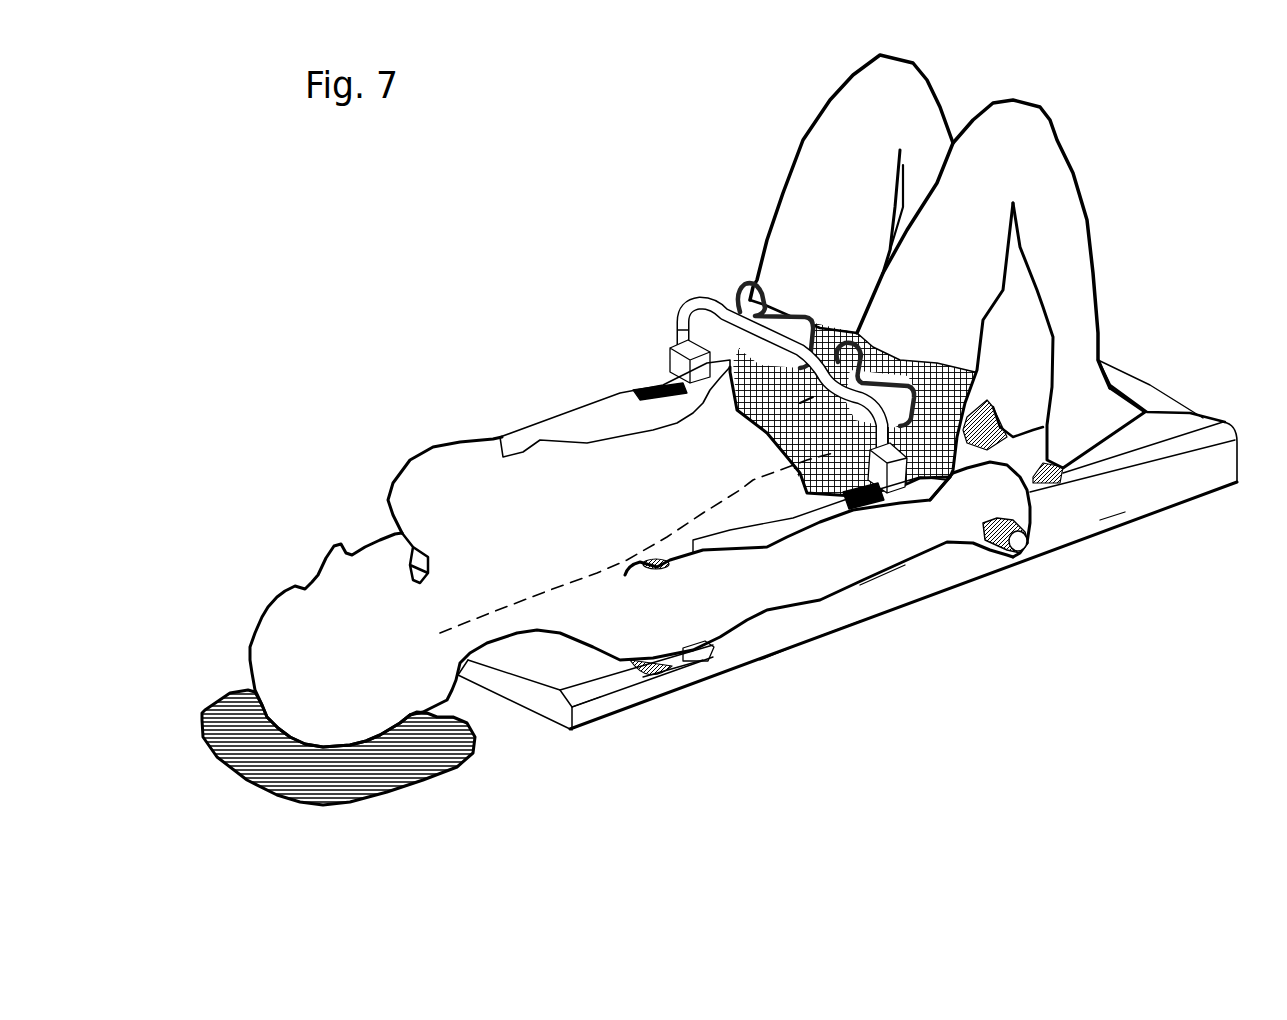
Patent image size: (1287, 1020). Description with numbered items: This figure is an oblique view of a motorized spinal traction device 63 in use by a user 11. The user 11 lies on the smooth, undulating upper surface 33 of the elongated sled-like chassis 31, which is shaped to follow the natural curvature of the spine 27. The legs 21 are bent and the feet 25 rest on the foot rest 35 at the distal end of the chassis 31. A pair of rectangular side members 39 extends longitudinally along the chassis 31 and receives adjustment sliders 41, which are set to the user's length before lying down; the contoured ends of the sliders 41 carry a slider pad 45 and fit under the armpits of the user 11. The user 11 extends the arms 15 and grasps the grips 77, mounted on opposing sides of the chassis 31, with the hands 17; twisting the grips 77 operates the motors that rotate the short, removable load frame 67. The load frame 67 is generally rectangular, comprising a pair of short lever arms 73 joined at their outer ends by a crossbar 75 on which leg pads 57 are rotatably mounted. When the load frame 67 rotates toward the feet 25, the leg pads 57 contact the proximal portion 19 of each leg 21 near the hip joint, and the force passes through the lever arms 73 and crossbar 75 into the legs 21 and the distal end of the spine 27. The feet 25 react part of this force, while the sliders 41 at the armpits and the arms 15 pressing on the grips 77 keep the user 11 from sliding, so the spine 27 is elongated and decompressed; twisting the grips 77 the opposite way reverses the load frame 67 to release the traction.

The user 11 is at (272, 585).
The arms 15 is at (873, 543).
The hands 17 is at (1010, 507).
The proximal portion of legs 19 is at (907, 340).
The legs 21 is at (1047, 167).
The feet 25 is at (1108, 432).
The spine 27 is at (565, 590).
The chassis 31 is at (850, 620).
The upper surface 33 is at (562, 670).
The foot rest 35 is at (1150, 390).
The side members 39 is at (777, 637).
The adjustment sliders 41 is at (697, 650).
The slider pad 45 is at (657, 677).
The leg pads 57 is at (745, 295).
The spinal traction device 63 is at (1123, 523).
The load frame 67 is at (680, 294).
The lever arms 73 is at (680, 330).
The crossbar 75 is at (672, 343).
The grips 77 is at (1020, 543).